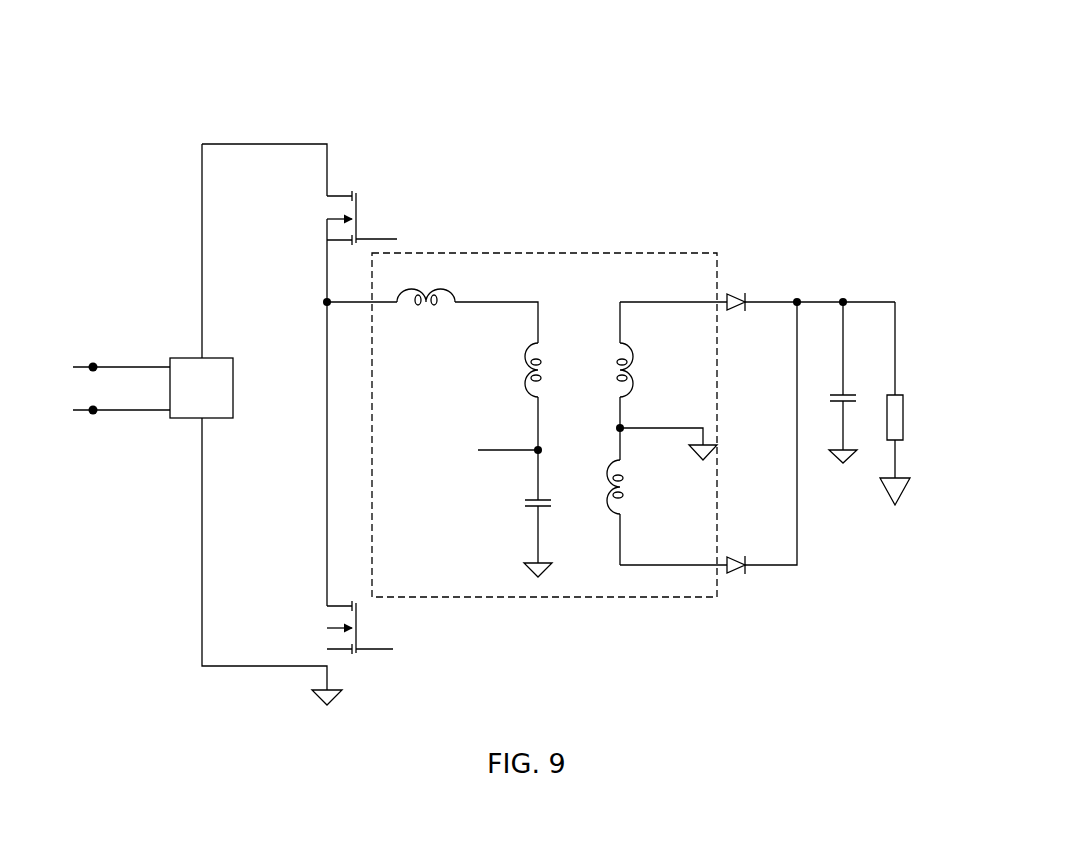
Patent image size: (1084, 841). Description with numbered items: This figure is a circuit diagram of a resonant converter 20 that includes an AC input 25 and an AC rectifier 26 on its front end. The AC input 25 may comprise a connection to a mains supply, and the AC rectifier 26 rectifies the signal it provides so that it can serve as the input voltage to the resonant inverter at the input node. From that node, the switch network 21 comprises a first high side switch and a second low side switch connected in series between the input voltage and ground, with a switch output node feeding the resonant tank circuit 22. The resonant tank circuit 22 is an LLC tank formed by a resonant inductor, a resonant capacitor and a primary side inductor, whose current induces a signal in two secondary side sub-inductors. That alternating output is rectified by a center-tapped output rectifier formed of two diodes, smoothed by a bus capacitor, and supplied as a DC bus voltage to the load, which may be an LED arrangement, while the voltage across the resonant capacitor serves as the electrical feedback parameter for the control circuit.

The resonant converter 20 is at (662, 71).
The switch network 21 is at (334, 116).
The resonant tank circuit 22 is at (546, 252).
The AC input 25 is at (104, 357).
The AC rectifier 26 is at (208, 357).